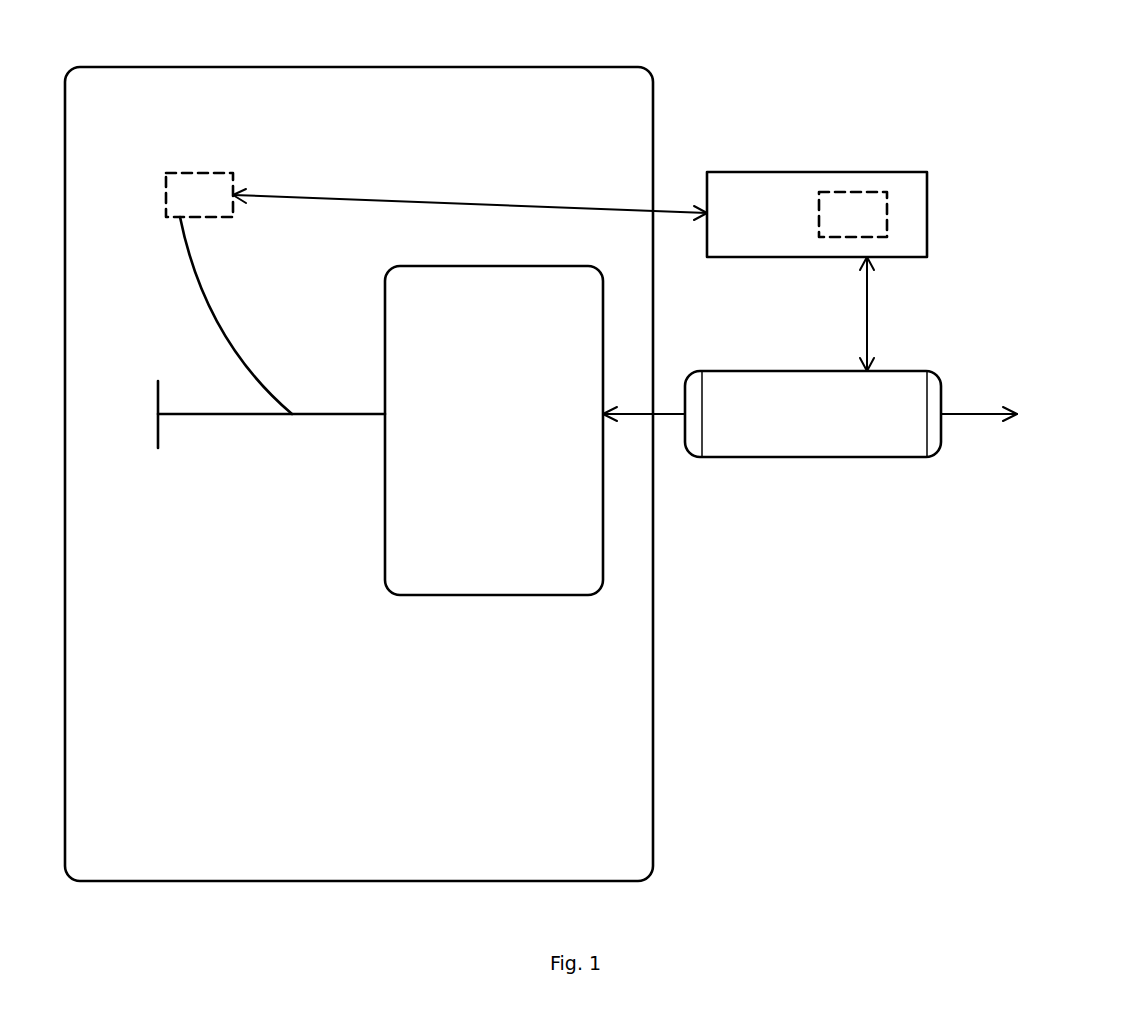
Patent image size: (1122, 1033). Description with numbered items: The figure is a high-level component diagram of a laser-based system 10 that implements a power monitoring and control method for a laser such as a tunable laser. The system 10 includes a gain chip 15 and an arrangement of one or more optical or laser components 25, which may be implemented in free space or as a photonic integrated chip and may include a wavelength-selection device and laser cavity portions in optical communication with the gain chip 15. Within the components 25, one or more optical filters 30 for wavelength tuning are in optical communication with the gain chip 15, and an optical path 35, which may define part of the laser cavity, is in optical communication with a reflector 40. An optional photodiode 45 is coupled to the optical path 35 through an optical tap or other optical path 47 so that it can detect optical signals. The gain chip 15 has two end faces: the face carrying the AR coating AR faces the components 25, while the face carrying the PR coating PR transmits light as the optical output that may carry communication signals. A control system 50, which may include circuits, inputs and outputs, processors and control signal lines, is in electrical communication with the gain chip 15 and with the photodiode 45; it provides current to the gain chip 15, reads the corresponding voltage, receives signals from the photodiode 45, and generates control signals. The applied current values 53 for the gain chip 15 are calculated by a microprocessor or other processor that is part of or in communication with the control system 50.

The system 10 is at (998, 120).
The gain chip 15 is at (770, 371).
The optical or laser components 25 is at (653, 105).
The optical filter 30 is at (453, 595).
The optical path 35 is at (322, 414).
The reflector 40 is at (158, 440).
The photodiode 45 is at (182, 172).
The optical tap 47 is at (223, 322).
The control system 50 is at (927, 213).
The applied current values 53 is at (819, 213).
The PR coating PR is at (940, 380).
The AR coating AR is at (693, 443).